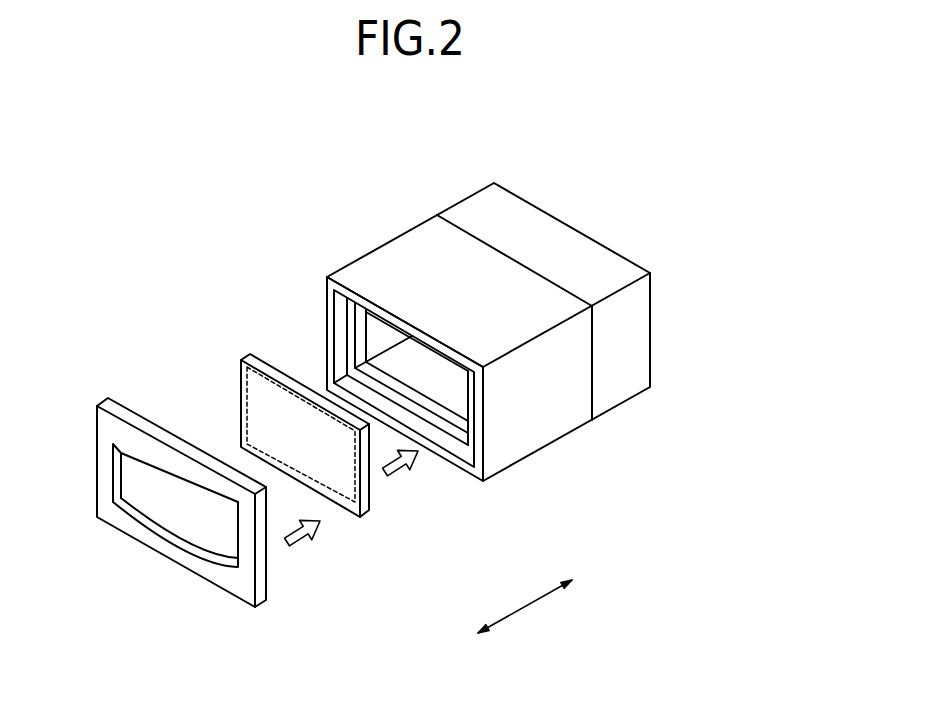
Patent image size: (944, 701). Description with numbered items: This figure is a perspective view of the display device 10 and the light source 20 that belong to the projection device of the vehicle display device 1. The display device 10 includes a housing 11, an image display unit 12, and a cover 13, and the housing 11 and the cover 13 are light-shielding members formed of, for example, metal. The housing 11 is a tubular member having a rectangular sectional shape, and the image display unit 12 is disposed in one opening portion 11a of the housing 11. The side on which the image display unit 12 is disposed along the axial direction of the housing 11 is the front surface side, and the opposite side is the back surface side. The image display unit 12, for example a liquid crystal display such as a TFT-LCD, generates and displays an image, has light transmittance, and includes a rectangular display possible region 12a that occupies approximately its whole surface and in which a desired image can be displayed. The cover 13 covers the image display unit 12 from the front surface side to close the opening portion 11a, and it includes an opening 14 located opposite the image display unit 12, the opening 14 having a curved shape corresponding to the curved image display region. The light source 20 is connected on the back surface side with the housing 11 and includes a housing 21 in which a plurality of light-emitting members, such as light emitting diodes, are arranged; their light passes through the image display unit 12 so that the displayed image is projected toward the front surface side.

The vehicle display device 1 is at (195, 177).
The display device 10 is at (401, 210).
The housing 11 is at (352, 277).
The opening portion 11a is at (378, 312).
The image display unit 12 is at (272, 372).
The display possible region 12a is at (244, 385).
The cover 13 is at (119, 410).
The opening 14 is at (164, 481).
The light source 20 is at (444, 163).
The housing 21 is at (546, 240).